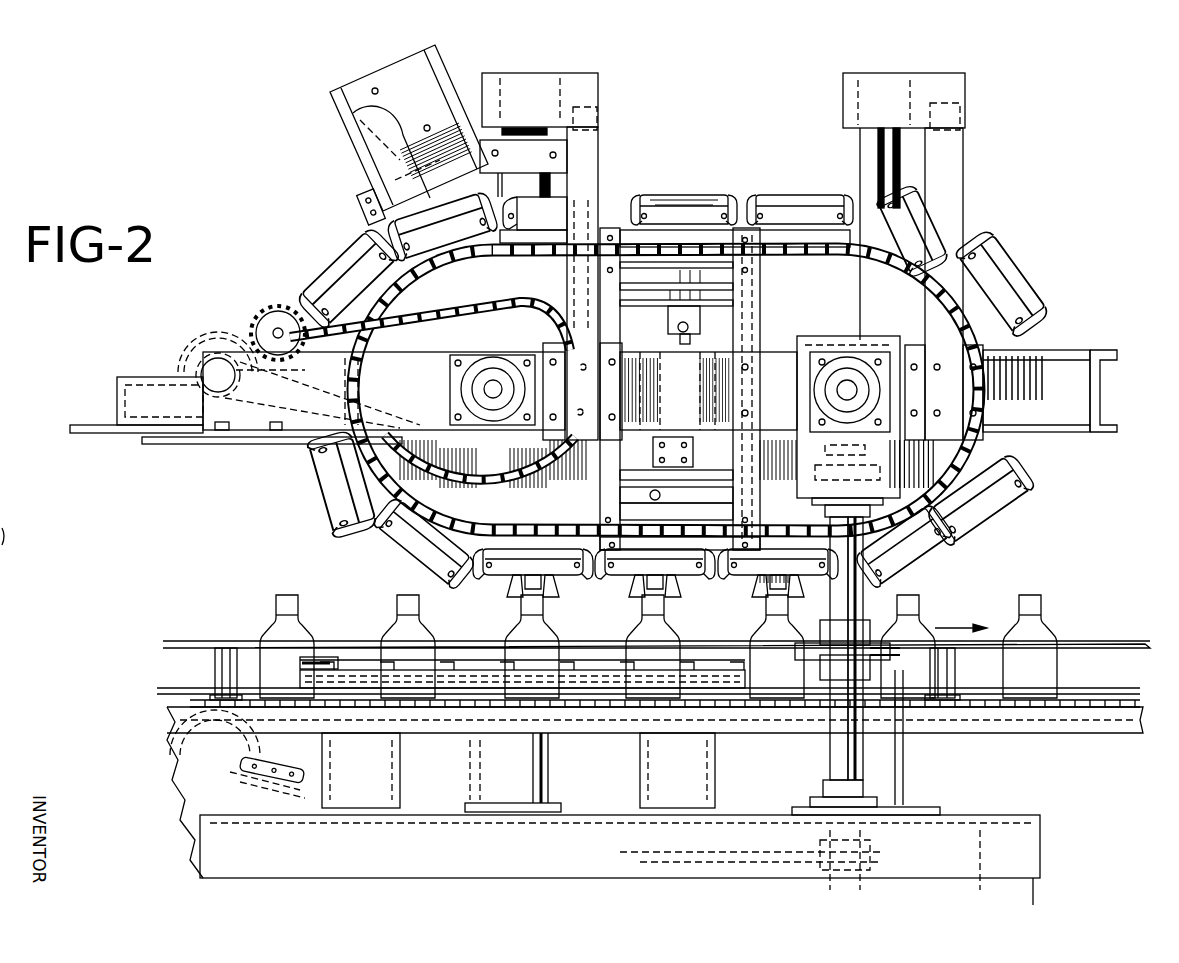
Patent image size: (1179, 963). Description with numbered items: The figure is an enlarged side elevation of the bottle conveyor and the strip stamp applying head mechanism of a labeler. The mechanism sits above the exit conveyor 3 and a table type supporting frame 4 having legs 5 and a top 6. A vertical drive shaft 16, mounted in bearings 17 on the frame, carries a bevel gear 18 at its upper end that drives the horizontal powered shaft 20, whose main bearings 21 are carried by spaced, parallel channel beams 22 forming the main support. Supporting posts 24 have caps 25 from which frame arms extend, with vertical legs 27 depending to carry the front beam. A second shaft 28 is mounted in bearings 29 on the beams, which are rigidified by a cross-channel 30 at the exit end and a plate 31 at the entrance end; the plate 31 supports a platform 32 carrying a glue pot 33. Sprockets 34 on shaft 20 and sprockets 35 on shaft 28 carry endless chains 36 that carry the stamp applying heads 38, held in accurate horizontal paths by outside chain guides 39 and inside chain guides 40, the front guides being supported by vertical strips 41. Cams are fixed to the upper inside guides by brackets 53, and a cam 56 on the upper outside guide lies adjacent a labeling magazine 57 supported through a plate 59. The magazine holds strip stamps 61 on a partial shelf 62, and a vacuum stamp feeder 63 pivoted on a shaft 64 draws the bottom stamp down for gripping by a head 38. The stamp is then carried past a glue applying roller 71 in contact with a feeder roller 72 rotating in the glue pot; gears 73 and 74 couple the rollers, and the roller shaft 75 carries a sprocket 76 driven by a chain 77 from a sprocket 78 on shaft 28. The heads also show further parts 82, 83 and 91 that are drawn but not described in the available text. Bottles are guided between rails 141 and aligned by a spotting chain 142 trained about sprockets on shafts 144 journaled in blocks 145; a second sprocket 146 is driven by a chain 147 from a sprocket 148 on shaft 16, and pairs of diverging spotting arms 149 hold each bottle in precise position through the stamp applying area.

The exit conveyor 3 is at (165, 708).
The supporting frame 4 is at (320, 230).
The legs 5 is at (1040, 893).
The top 6 is at (476, 38).
The vertical drive shaft 16 is at (828, 758).
The bearings 17 is at (865, 790).
The bevel gear 18 is at (800, 405).
The horizontal shaft 20 is at (847, 385).
The main bearings 21 is at (872, 375).
The channel beams 22 is at (1050, 352).
The supporting posts 24 is at (900, 585).
The caps 25 is at (585, 85).
The vertical legs 27 is at (598, 163).
The second shaft 28 is at (484, 389).
The bearings 29 is at (493, 357).
The cross-channel 30 is at (1117, 385).
The plate 31 is at (185, 448).
The platform 32 is at (95, 437).
The glue pot 33 is at (135, 380).
The sprockets 34 is at (915, 285).
The sprockets 35 is at (493, 520).
The endless chains 36 is at (715, 220).
The stamp applying heads 38 is at (860, 195).
The chain guides 39 is at (670, 220).
The chain guides 40 is at (668, 322).
The vertical strips 41 is at (765, 307).
The brackets 53 is at (735, 298).
The cam 56 is at (520, 216).
The labeling magazine 57 is at (380, 75).
The plate 59 is at (598, 135).
The strip stamps 61 is at (580, 600).
The partial shelf 62 is at (420, 228).
The stamp feeder 63 is at (362, 195).
The shaft 64 is at (380, 185).
The glue applying roller 71 is at (275, 308).
The feeder roller 72 is at (213, 343).
The gear 73 is at (310, 310).
The gear 74 is at (196, 350).
The shaft 75 is at (238, 352).
The sprocket 76 is at (270, 368).
The chain 77 is at (430, 318).
The sprocket 78 is at (535, 320).
The gripper head 82 is at (655, 573).
The gripper finger 83 is at (560, 620).
The gripper unit 91 is at (520, 200).
The guide rails 141 is at (190, 660).
The spotting chain 142 is at (475, 668).
The shafts 144 is at (358, 722).
The blocks 145 is at (398, 755).
The second sprocket 146 is at (620, 852).
The chain 147 is at (760, 860).
The sprocket 148 is at (885, 855).
The spotting arms 149 is at (330, 657).